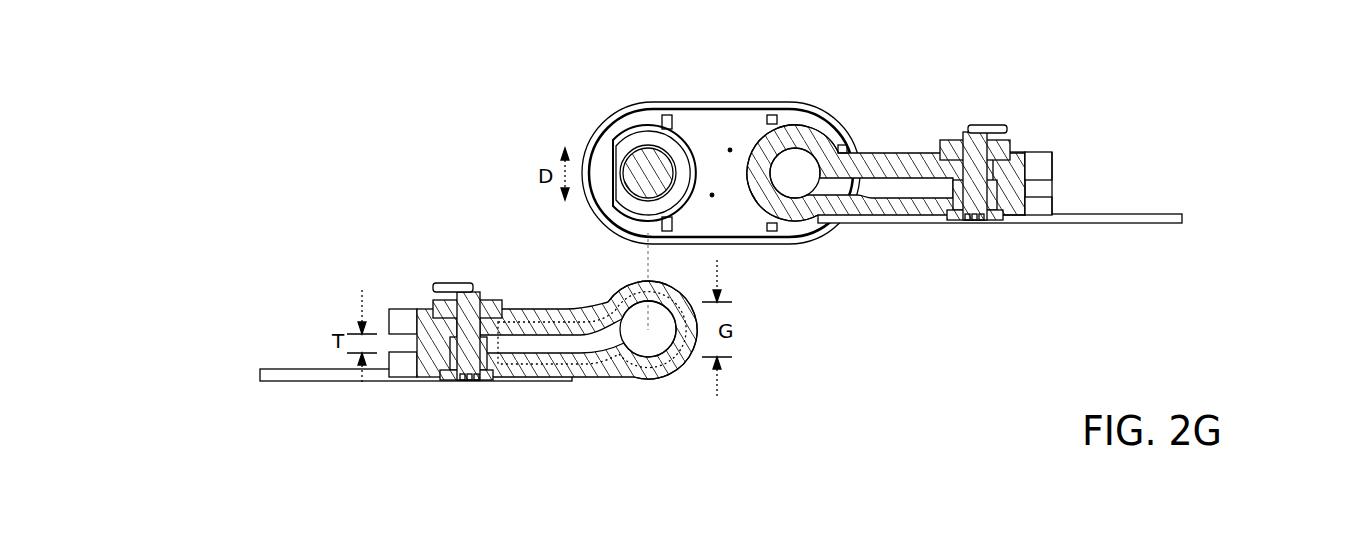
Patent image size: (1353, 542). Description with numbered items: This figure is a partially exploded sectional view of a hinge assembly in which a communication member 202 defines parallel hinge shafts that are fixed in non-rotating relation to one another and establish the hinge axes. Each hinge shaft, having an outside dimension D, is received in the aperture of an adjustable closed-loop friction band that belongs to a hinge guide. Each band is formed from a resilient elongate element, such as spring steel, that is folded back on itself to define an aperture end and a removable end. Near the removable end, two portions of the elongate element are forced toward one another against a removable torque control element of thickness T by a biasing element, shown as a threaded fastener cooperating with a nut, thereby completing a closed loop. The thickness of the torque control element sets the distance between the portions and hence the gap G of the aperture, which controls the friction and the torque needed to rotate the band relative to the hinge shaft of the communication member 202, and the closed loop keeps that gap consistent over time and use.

The communication member 202 is at (718, 90).